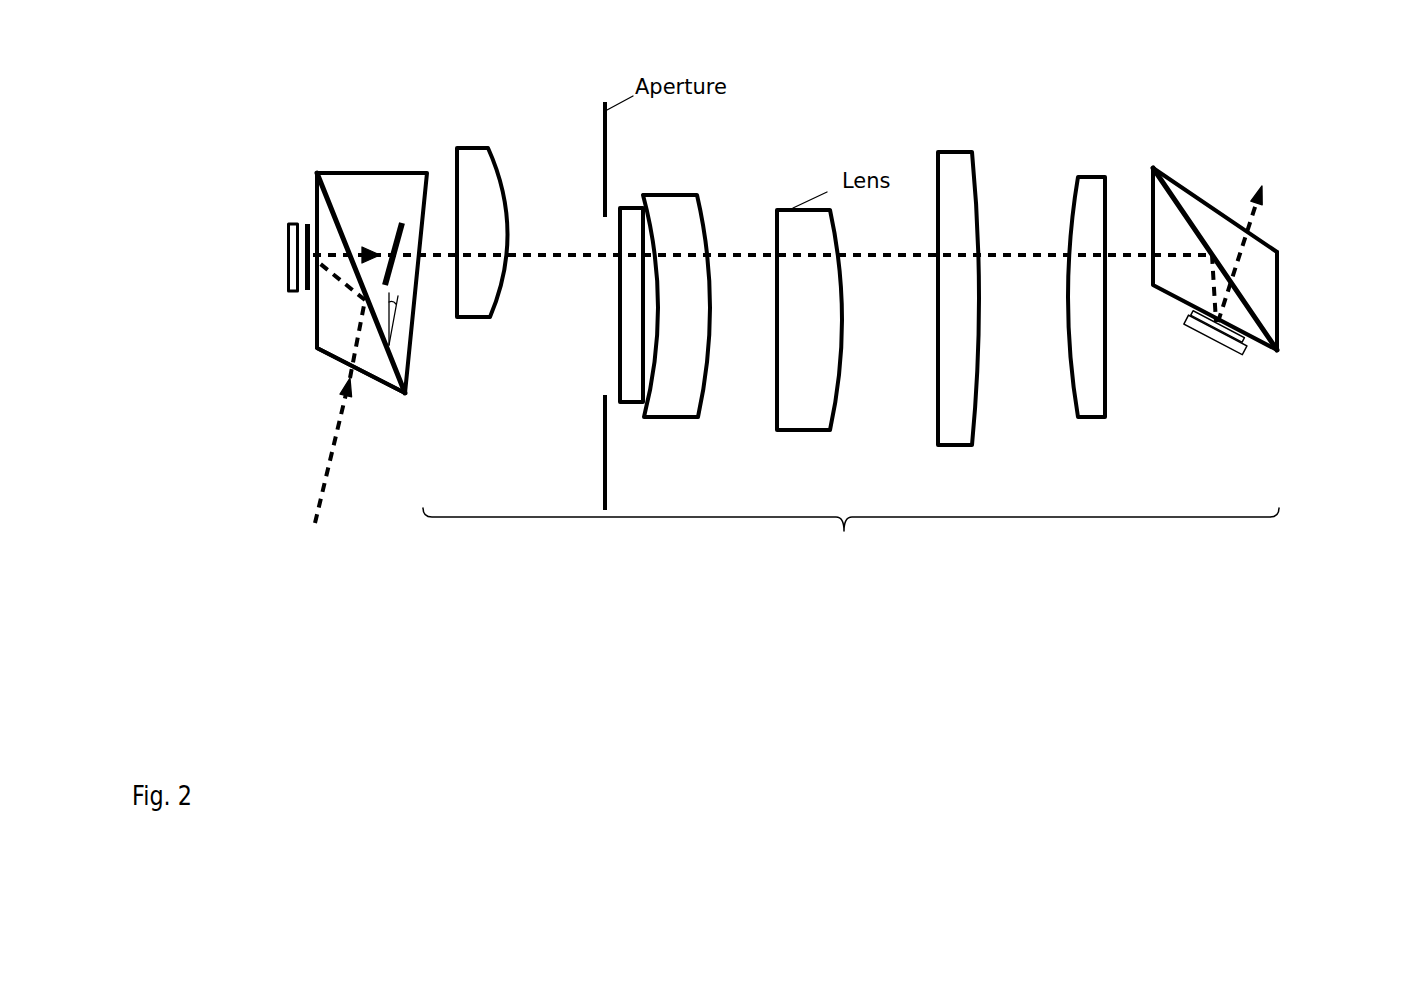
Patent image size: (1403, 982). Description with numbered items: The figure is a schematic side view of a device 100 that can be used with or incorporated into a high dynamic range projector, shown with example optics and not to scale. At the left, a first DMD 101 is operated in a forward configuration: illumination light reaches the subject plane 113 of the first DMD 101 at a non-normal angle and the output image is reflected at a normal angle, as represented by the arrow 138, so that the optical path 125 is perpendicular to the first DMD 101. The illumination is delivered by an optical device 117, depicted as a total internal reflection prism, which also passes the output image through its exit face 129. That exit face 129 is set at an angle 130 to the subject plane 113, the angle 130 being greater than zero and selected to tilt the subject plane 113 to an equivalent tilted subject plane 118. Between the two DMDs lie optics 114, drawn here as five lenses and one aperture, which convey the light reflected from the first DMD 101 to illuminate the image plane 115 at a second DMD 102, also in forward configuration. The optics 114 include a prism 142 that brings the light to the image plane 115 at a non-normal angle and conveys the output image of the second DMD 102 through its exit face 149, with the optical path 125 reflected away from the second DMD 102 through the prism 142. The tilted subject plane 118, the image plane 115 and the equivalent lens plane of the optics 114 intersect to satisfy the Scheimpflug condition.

The device 100 is at (283, 618).
The first DMD 101 is at (287, 258).
The subject plane 113 is at (308, 224).
The exit face 129 is at (424, 172).
The optical device 117 is at (337, 360).
The equivalent tilted subject plane 118 is at (400, 222).
The arrow 138 is at (366, 250).
The angle 130 is at (397, 332).
The optical path 125 is at (330, 452).
The optics 114 is at (851, 335).
The prism 142 is at (1158, 171).
The exit face 149 is at (1280, 254).
The second DMD 102 is at (1230, 353).
The image plane 115 is at (1250, 349).